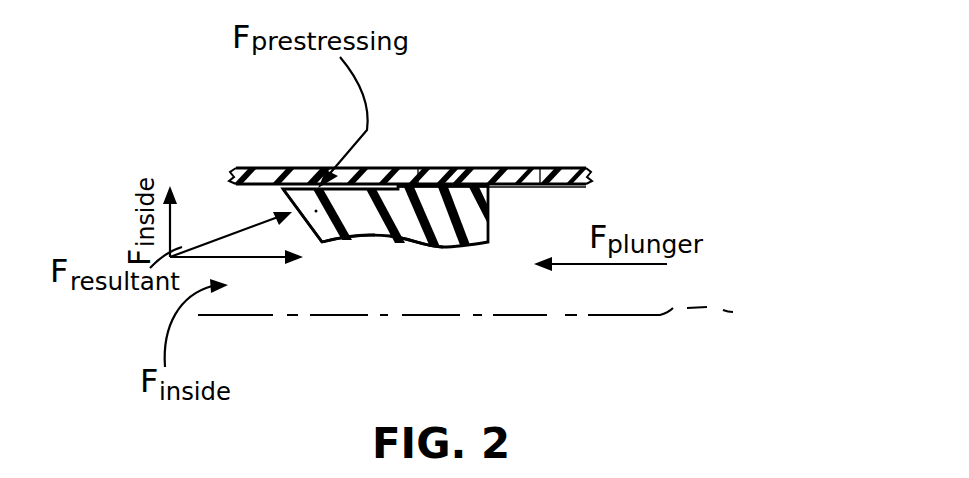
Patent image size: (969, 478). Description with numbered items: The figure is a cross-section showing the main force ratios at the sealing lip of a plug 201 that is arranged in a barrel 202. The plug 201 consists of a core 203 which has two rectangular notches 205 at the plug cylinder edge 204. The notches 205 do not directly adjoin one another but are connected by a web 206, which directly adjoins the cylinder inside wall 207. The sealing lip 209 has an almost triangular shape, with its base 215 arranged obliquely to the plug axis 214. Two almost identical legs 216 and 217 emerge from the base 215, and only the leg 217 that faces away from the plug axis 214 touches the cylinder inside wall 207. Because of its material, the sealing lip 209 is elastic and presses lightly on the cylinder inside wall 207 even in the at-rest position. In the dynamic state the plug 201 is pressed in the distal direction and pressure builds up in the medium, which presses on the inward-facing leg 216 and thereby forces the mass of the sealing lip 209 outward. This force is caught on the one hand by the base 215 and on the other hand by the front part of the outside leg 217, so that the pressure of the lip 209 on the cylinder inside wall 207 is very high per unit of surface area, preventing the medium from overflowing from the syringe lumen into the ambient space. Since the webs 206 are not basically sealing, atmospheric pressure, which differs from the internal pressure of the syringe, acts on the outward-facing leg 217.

The plug 201 is at (482, 215).
The barrel 202 is at (577, 167).
The core 203 is at (462, 246).
The plug cylinder edge 204 is at (520, 187).
The notches 205 is at (360, 185).
The web 206 is at (418, 167).
The cylinder inside wall 207 is at (540, 167).
The sealing lip 209 is at (316, 230).
The plug axis 214 is at (495, 317).
The base 215 is at (358, 240).
The leg 216 is at (316, 211).
The leg 217 is at (314, 170).